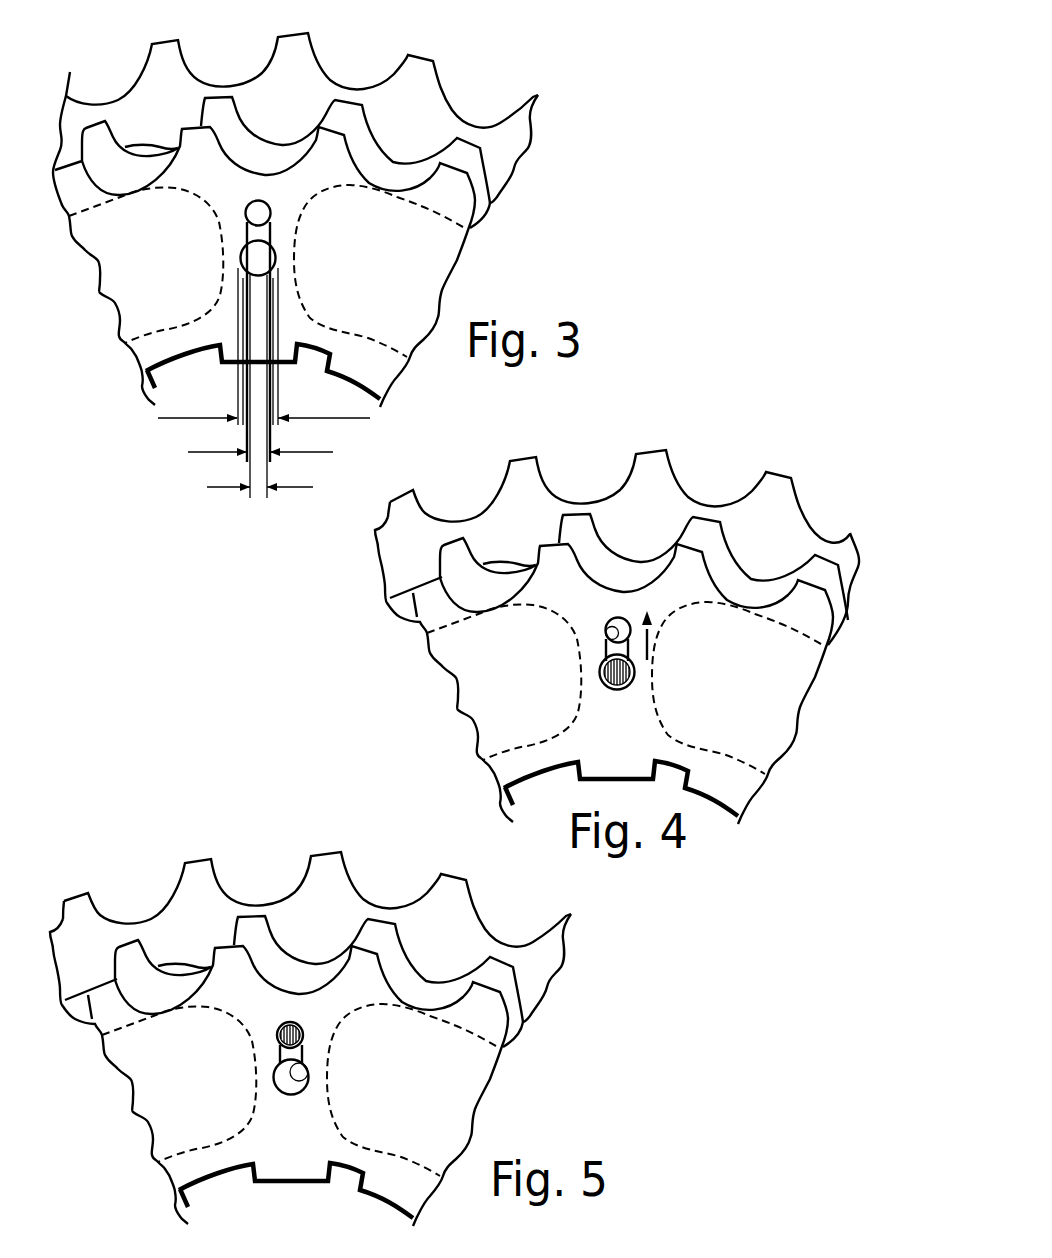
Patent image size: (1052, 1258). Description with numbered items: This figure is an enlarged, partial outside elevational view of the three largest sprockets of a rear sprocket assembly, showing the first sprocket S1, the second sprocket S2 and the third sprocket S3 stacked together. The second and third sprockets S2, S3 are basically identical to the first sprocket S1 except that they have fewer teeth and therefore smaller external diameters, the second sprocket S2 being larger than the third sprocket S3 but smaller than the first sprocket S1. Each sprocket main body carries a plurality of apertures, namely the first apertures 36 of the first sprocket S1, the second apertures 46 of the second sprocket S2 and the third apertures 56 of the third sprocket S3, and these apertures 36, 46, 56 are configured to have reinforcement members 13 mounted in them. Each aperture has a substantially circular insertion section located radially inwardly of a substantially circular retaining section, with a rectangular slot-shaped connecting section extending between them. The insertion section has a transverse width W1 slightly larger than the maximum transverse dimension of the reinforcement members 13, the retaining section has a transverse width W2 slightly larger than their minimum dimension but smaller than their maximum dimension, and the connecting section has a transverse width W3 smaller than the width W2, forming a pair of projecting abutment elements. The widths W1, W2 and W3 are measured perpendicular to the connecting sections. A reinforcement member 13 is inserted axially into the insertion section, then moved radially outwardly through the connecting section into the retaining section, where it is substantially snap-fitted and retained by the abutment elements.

In FIG. 3, the first sprocket S1 is at (447, 113).
In FIG. 4, the first sprocket S1 is at (623, 527).
In FIG. 5, the first sprocket S1 is at (317, 930).
In FIG. 3, the second sprocket S2 is at (477, 172).
In FIG. 4, the second sprocket S2 is at (619, 516).
In FIG. 5, the second sprocket S2 is at (294, 930).
In FIG. 3, the third sprocket S3 is at (466, 212).
In FIG. 4, the third sprocket S3 is at (604, 643).
In FIG. 5, the third sprocket S3 is at (279, 1033).
In FIG. 3, the first apertures 36 is at (216, 250).
In FIG. 4, the first apertures 36 is at (482, 664).
In FIG. 5, the first apertures 36 is at (447, 1070).
In FIG. 3, the second apertures 46 is at (216, 250).
In FIG. 4, the second apertures 46 is at (482, 664).
In FIG. 5, the second apertures 46 is at (447, 1070).
In FIG. 3, the third apertures 56 is at (242, 202).
In FIG. 4, the third apertures 56 is at (482, 664).
In FIG. 5, the third apertures 56 is at (447, 1070).
In FIG. 4, the reinforcement members 13 is at (668, 682).
In FIG. 5, the reinforcement members 13 is at (238, 1052).
In FIG. 3, the transverse width of insertion section W1 is at (158, 418).
In FIG. 3, the transverse width of retaining section W2 is at (188, 452).
In FIG. 3, the transverse width of connecting section W3 is at (207, 487).